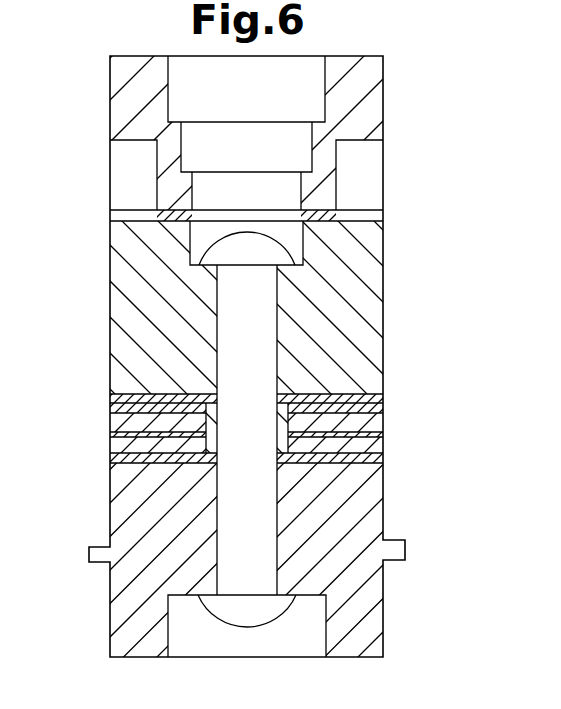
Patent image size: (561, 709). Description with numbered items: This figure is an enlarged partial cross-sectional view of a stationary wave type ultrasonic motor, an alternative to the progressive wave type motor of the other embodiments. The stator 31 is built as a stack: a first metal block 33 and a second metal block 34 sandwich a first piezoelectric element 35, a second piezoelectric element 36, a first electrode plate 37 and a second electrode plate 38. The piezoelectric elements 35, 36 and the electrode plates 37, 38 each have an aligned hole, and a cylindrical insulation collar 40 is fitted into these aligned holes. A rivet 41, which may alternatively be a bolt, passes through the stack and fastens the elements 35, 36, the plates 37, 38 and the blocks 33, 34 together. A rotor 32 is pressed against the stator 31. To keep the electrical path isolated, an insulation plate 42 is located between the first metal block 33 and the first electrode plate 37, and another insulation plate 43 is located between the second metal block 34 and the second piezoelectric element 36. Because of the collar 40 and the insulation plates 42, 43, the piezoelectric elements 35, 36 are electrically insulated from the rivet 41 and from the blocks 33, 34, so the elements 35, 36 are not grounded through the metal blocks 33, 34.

The stator 31 is at (110, 270).
The rotor 32 is at (375, 67).
The first metal block 33 is at (378, 280).
The second metal block 34 is at (376, 528).
The first piezoelectric element 35 is at (384, 411).
The second piezoelectric element 36 is at (384, 448).
The first electrode plate 37 is at (112, 407).
The second electrode plate 38 is at (383, 435).
The cylindrical insulation collar 40 is at (282, 428).
The rivet 41 is at (257, 617).
The insulation plate 42 is at (112, 396).
The insulation plate 43 is at (112, 459).